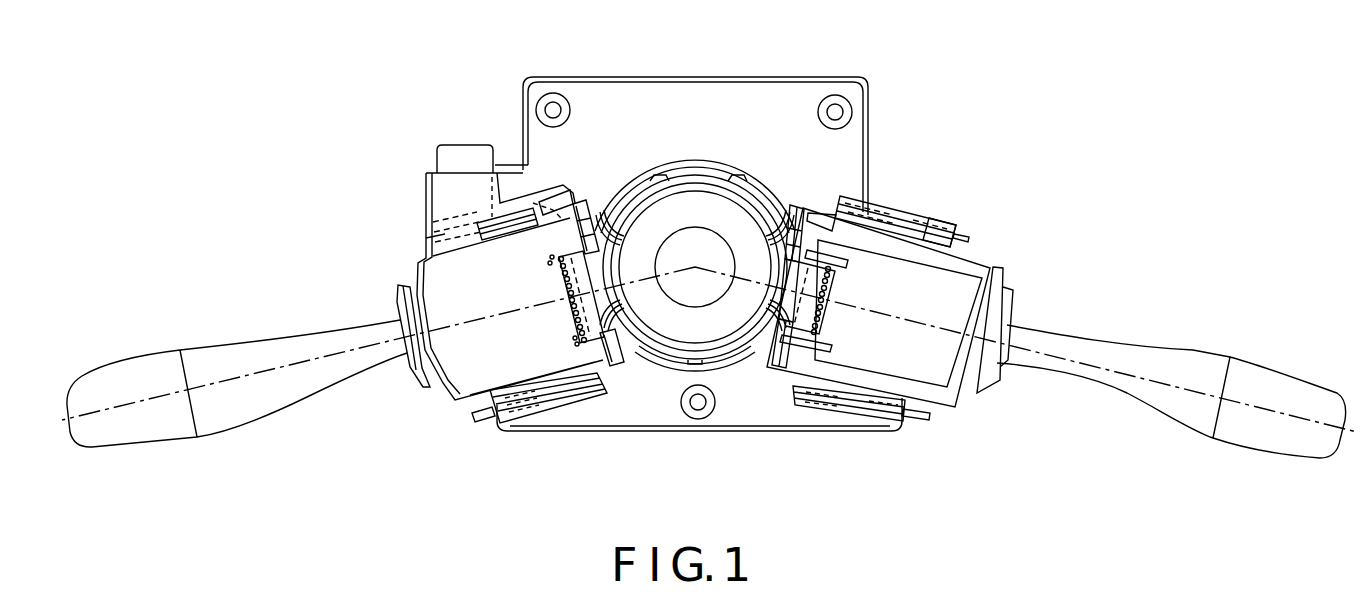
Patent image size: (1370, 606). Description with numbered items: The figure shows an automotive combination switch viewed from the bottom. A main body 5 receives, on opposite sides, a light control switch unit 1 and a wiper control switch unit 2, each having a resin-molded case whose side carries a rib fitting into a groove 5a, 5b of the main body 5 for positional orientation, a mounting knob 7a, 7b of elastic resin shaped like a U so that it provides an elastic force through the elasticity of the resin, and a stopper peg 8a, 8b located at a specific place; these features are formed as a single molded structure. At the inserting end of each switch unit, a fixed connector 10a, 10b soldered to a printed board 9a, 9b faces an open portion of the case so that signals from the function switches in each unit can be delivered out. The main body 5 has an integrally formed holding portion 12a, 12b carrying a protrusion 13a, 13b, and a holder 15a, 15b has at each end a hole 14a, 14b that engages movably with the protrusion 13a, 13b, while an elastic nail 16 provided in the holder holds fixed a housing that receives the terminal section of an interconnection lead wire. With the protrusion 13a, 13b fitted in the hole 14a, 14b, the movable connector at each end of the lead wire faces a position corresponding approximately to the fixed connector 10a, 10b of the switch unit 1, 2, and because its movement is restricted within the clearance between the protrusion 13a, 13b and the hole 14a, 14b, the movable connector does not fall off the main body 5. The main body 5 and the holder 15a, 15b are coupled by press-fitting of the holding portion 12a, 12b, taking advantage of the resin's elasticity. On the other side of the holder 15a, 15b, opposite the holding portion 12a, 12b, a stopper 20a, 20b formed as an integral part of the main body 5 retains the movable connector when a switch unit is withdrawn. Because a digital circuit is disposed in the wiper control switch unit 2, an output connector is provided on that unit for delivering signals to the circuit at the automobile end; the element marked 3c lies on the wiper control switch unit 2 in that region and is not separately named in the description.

The light control switch unit 1 is at (978, 367).
The wiper control switch unit 2 is at (418, 380).
The projection 3c is at (452, 150).
The main body 5 is at (773, 95).
The groove 5a is at (875, 218).
The groove 5b is at (480, 227).
The mounting knob 7a is at (970, 243).
The mounting knob 7b is at (426, 240).
The stopper peg 8a is at (925, 220).
The stopper peg 8b is at (477, 222).
The printed board 9a is at (965, 400).
The printed board 9b is at (453, 402).
The fixed connector 10a is at (828, 345).
The fixed connector 10b is at (590, 380).
The holding portion 12a is at (795, 217).
The holding portion 12b is at (606, 208).
The protrusion 13a is at (832, 200).
The protrusion 13b is at (598, 203).
The hole 14a is at (770, 367).
The hole 14b is at (612, 350).
The holder 15a is at (812, 268).
The holder 15b is at (625, 322).
The elastic nail 16 is at (690, 176).
The stopper 20a is at (830, 220).
The stopper 20b is at (583, 215).